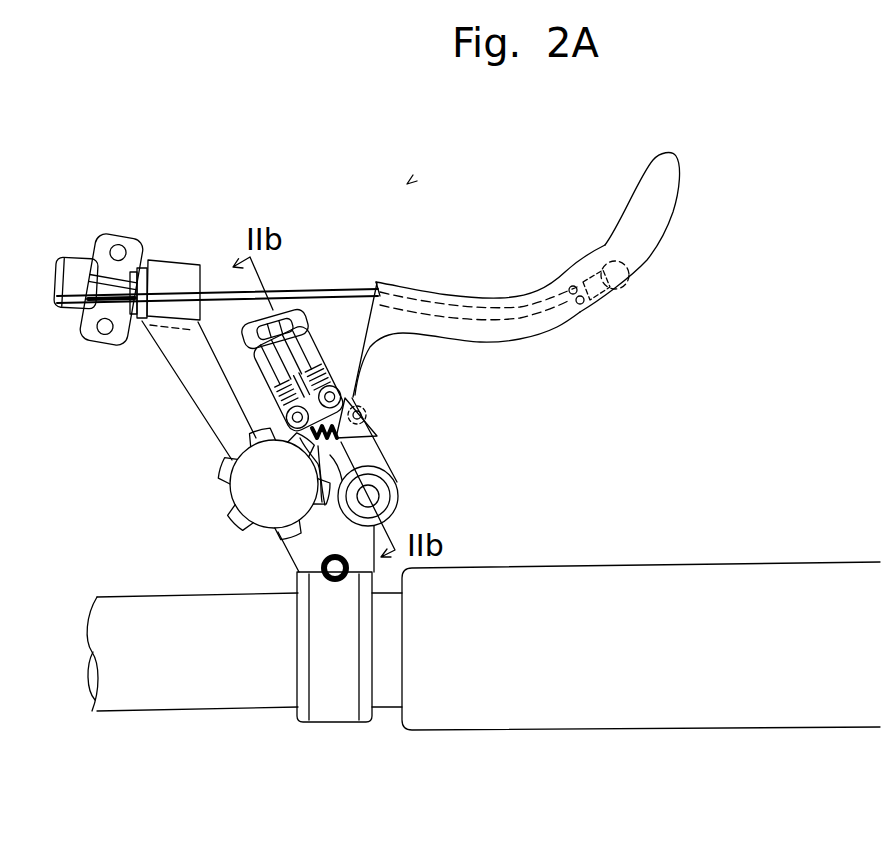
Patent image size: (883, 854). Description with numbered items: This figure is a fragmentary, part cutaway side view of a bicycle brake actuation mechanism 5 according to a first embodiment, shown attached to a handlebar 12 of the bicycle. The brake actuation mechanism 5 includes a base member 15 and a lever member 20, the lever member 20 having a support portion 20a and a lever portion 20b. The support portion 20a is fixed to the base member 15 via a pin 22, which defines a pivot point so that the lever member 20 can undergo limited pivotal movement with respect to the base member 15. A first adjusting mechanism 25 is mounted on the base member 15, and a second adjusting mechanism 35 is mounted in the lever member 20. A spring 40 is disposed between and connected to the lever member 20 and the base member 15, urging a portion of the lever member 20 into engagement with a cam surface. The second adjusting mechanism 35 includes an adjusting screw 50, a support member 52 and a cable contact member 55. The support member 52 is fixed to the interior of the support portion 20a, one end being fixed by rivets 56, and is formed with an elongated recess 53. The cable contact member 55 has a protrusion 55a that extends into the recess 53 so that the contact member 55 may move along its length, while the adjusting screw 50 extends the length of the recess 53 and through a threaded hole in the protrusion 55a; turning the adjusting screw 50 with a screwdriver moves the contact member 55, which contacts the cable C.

The brake actuation mechanism 5 is at (407, 184).
The control cable C is at (210, 290).
The handlebar 12 is at (217, 688).
The base member 15 is at (300, 552).
The lever member 20 is at (370, 340).
The support portion 20a is at (373, 446).
The lever portion 20b is at (648, 236).
The pin 22 is at (370, 496).
The first adjusting mechanism 25 is at (205, 504).
The second adjusting mechanism 35 is at (342, 323).
The spring 40 is at (374, 432).
The adjusting screw 50 is at (287, 310).
The support member 52 is at (273, 365).
The elongated recess 53 is at (303, 350).
The cable contact member 55 is at (282, 410).
The protrusion 55a is at (275, 420).
The rivets 56 is at (353, 396).